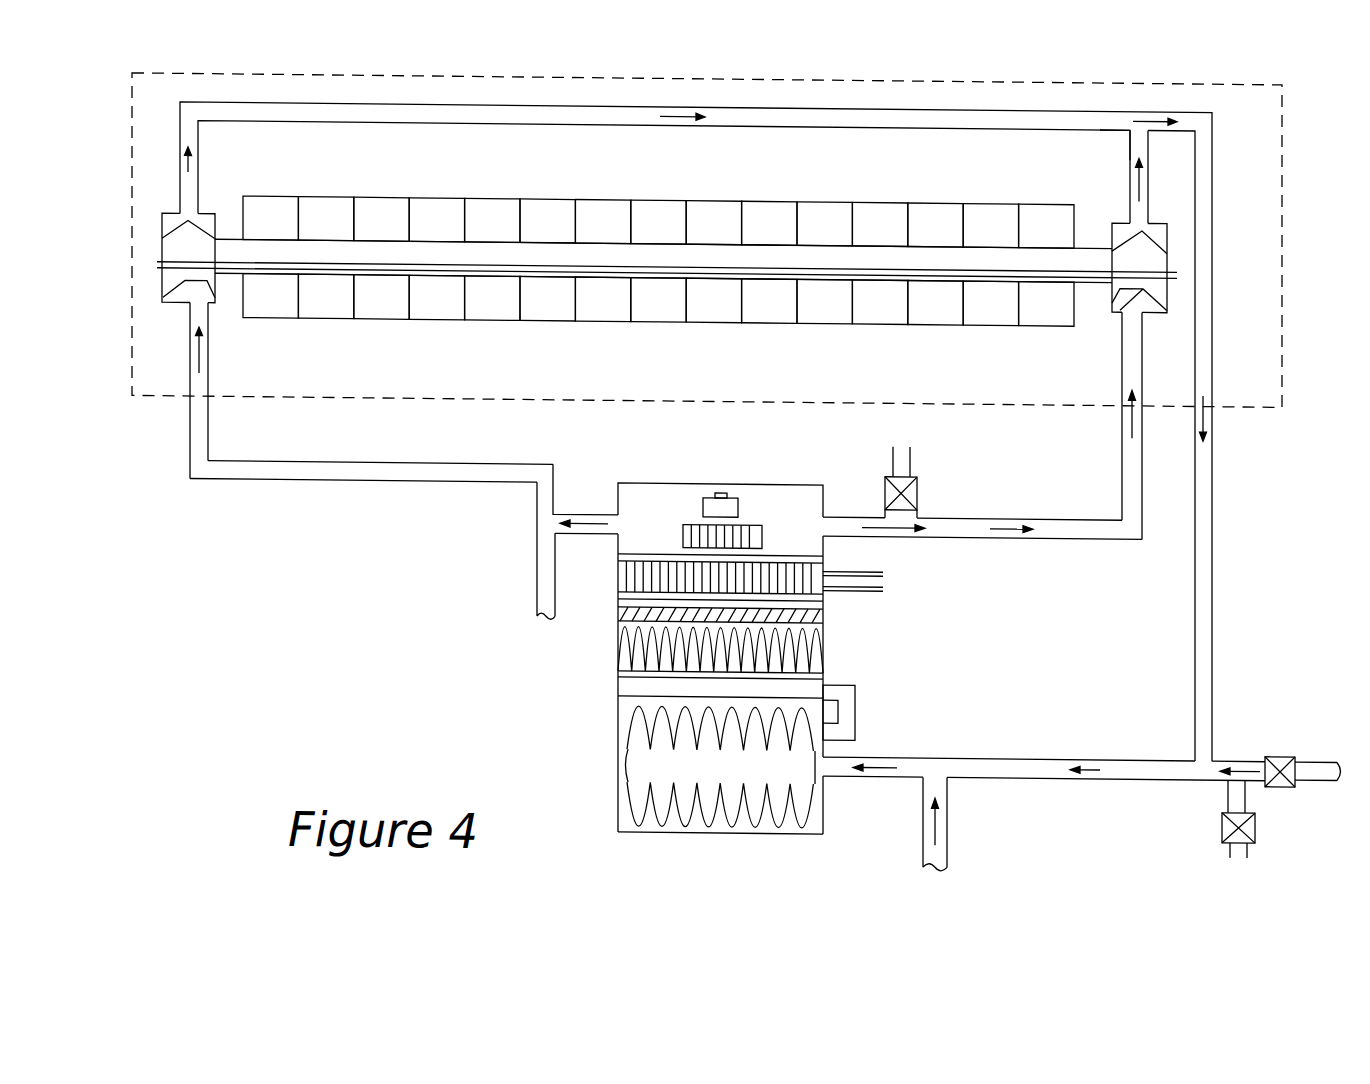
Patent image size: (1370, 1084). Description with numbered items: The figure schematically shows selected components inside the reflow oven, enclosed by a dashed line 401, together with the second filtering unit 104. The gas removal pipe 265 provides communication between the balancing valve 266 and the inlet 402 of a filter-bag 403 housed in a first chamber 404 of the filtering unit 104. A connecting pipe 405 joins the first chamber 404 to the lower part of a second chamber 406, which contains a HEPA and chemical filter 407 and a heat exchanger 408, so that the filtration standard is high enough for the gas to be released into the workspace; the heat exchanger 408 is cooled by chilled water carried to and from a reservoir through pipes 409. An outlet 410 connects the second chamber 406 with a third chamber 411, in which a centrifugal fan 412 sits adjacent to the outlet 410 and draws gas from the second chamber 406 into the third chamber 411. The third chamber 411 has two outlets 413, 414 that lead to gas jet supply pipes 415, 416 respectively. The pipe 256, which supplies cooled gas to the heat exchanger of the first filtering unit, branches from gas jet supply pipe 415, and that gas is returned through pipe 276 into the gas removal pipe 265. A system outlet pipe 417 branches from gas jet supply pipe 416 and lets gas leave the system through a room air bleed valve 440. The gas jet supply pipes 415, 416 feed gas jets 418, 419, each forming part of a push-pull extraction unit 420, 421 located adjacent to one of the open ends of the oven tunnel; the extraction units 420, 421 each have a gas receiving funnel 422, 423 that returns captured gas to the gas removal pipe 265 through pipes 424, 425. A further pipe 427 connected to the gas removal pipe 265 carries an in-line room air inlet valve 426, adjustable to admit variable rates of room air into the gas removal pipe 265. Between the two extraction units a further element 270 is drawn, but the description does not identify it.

The second filtering unit 104 is at (803, 478).
The pipe 256 is at (537, 556).
The gas removal pipe 265 is at (1037, 748).
The balancing valve 266 is at (1272, 745).
The module array heat exchanger 270 is at (532, 252).
The pipe 276 is at (947, 845).
The dashed line 401 is at (1282, 155).
The inlet 402 is at (830, 760).
The filter-bag 403 is at (637, 728).
The first chamber 404 is at (627, 813).
The connecting pipe 405 is at (855, 691).
The second chamber 406 is at (637, 680).
The HEPA and chemical filter 407 is at (823, 626).
The heat exchanger 408 is at (627, 573).
The pipes 409 is at (870, 582).
The outlet 410 is at (703, 551).
The third chamber 411 is at (667, 512).
The centrifugal fan 412 is at (750, 534).
The outlet 413 is at (615, 521).
The outlet 414 is at (825, 520).
The gas jet supply pipe 415 is at (495, 461).
The gas jet supply pipe 416 is at (1058, 507).
The system outlet pipe 417 is at (910, 454).
The gas jet 418 is at (187, 291).
The gas jet 419 is at (1143, 292).
The push-pull extraction unit 420 is at (193, 269).
The push-pull extraction unit 421 is at (1157, 251).
The gas receiving funnel 422 is at (172, 220).
The gas receiving funnel 423 is at (1162, 222).
The pipe 424 is at (795, 110).
The pipe 425 is at (1137, 137).
The room air inlet valve 426 is at (1230, 819).
The pipe 427 is at (1245, 789).
The room air bleed valve 440 is at (917, 489).